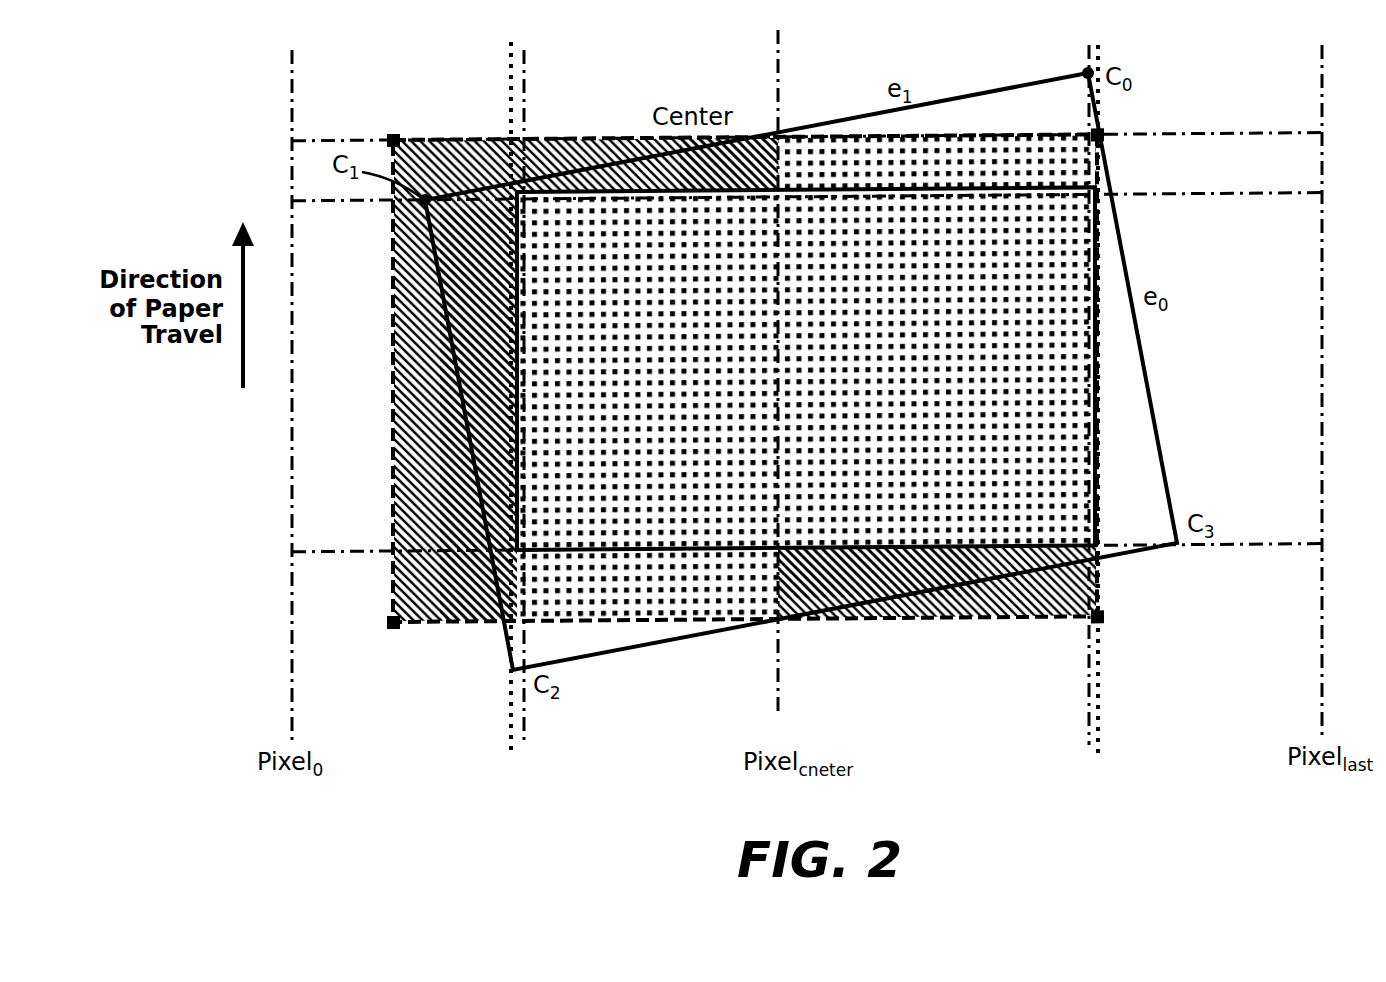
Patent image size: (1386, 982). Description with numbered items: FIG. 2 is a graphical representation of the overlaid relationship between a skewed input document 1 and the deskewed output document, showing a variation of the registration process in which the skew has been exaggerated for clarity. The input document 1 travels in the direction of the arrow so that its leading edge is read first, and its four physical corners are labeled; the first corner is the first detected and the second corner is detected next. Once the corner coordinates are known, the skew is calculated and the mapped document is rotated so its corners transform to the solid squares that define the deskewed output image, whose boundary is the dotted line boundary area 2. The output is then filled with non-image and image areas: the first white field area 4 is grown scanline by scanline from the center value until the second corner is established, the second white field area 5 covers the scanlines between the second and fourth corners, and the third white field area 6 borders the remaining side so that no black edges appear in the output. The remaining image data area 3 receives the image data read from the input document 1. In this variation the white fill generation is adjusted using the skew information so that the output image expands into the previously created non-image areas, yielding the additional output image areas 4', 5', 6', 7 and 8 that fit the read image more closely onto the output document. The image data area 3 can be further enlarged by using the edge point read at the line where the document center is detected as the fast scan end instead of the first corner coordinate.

The input document 1 is at (1013, 85).
The dotted line boundary area 2 is at (460, 138).
The image data area 3 is at (1052, 417).
The first white field area 4 is at (647, 131).
The output image area 4' is at (729, 119).
The second white field area 5 is at (427, 380).
The output image area 5' is at (427, 415).
The third white field area 6 is at (937, 617).
The output image area 6' is at (878, 608).
The output image area 7 is at (673, 608).
The output image area 8 is at (1075, 176).